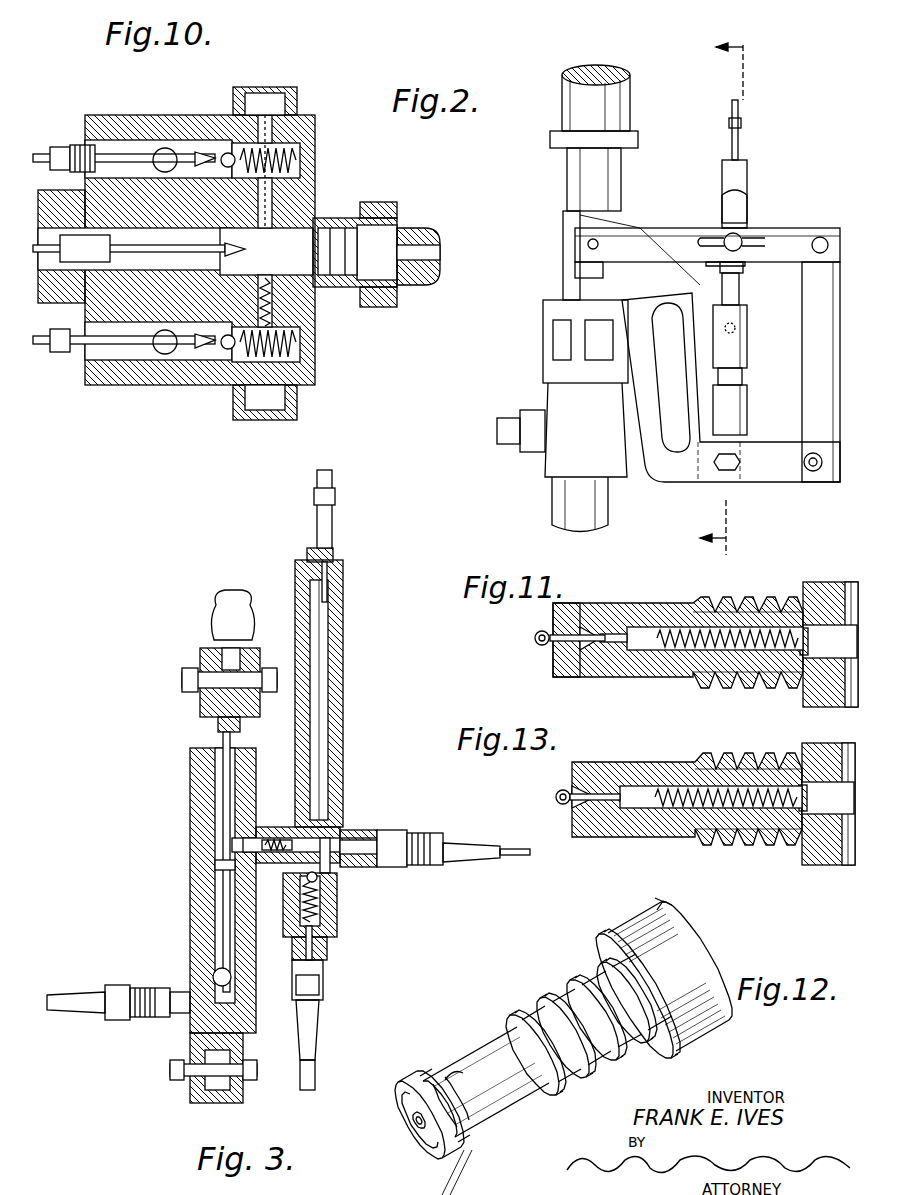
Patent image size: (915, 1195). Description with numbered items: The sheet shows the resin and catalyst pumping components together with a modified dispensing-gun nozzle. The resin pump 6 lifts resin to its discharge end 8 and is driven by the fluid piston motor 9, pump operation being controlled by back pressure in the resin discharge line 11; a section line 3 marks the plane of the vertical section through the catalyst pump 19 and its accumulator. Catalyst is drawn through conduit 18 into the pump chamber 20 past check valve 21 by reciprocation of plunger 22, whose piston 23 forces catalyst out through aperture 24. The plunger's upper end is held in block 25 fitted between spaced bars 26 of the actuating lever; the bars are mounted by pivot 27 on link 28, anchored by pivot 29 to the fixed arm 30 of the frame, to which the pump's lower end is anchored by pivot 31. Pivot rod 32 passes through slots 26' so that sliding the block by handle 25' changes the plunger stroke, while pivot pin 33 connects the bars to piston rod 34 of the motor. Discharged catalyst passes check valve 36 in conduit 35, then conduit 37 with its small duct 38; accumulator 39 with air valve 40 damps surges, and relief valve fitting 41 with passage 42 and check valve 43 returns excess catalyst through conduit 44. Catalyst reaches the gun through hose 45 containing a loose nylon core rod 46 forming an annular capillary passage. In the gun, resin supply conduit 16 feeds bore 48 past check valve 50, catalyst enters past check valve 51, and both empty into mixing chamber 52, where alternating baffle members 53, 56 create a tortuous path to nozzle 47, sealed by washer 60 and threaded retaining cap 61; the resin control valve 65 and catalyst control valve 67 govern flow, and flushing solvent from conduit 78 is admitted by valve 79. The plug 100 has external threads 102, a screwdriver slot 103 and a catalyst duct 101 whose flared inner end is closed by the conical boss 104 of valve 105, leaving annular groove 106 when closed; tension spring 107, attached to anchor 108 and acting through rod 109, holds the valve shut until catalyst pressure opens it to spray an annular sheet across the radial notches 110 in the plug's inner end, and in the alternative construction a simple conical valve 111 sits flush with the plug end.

In FIG. 2, the section line 3 is at (732, 299).
In FIG. 2, the pump 6 is at (560, 512).
In FIG. 2, the pump discharge end 8 is at (560, 460).
In FIG. 2, the fluid piston motor 9 is at (625, 100).
In FIG. 2, the resin discharge line 11 is at (505, 420).
In FIG. 10, the resin supply conduit 16 is at (175, 150).
In FIG. 3, the conduit 18 is at (60, 993).
In FIG. 2, the pump 19 is at (745, 405).
In FIG. 3, the pump 19 is at (188, 944).
In FIG. 3, the pump chamber 20 is at (213, 914).
In FIG. 3, the check valve 21 is at (212, 975).
In FIG. 2, the pump plunger 22 is at (745, 290).
In FIG. 3, the pump plunger 22 is at (222, 838).
In FIG. 3, the piston 23 is at (213, 870).
In FIG. 3, the aperture 24 is at (215, 856).
In FIG. 2, the block 25 is at (752, 276).
In FIG. 3, the block 25 is at (201, 723).
In FIG. 2, the handle 25' is at (711, 207).
In FIG. 3, the handle 25' is at (221, 602).
In FIG. 2, the spaced bars 26 is at (707, 229).
In FIG. 3, the spaced bars 26 is at (211, 671).
In FIG. 2, the slots 26' is at (716, 277).
In FIG. 2, the pivot 27 is at (829, 246).
In FIG. 2, the link 28 is at (825, 330).
In FIG. 2, the pivot 29 is at (817, 471).
In FIG. 2, the fixed arm 30 is at (675, 484).
In FIG. 3, the fixed arm 30 is at (190, 1095).
In FIG. 2, the pivot 31 is at (733, 471).
In FIG. 3, the pivot 31 is at (168, 1070).
In FIG. 2, the pivot rod 32 is at (745, 237).
In FIG. 3, the pivot rod 32 is at (180, 680).
In FIG. 2, the pivot pin 33 is at (586, 244).
In FIG. 2, the piston rod 34 is at (575, 268).
In FIG. 3, the conduit 35 is at (268, 826).
In FIG. 3, the check valve 36 is at (268, 856).
In FIG. 3, the conduit 37 is at (360, 829).
In FIG. 3, the small duct 38 is at (330, 860).
In FIG. 2, the accumulator 39 is at (750, 172).
In FIG. 3, the accumulator 39 is at (345, 672).
In FIG. 2, the air valve 40 is at (731, 140).
In FIG. 3, the air valve 40 is at (335, 556).
In FIG. 3, the relief valve fitting 41 is at (328, 944).
In FIG. 3, the passage 42 is at (298, 885).
In FIG. 3, the check valve 43 is at (338, 911).
In FIG. 3, the conduit 44 is at (316, 1062).
In FIG. 10, the catalyst conduit 45 is at (150, 295).
In FIG. 3, the catalyst conduit 45 is at (462, 845).
In FIG. 3, the flexible plastic solid core rod 46 is at (510, 848).
In FIG. 10, the nozzle 47 is at (420, 232).
In FIG. 10, the bore 48 is at (270, 195).
In FIG. 10, the check valve 50 is at (252, 90).
In FIG. 10, the check valve 51 is at (225, 352).
In FIG. 10, the mixing chamber 52 is at (300, 285).
In FIG. 10, the baffle member 53 is at (325, 240).
In FIG. 10, the baffle member 56 is at (345, 215).
In FIG. 10, the washer 60 is at (400, 270).
In FIG. 10, the threaded retaining cap 61 is at (390, 305).
In FIG. 10, the resin control valve 65 is at (228, 152).
In FIG. 10, the catalyst control valve 67 is at (180, 355).
In FIG. 10, the conduit 78 is at (75, 352).
In FIG. 10, the valve 79 is at (240, 365).
In FIG. 10, the plug 100 is at (280, 305).
In FIG. 11, the plug 100 is at (630, 607).
In FIG. 13, the plug 100 is at (630, 768).
In FIG. 12, the plug 100 is at (474, 1052).
In FIG. 11, the catalyst supply duct 101 is at (683, 660).
In FIG. 13, the catalyst supply duct 101 is at (640, 820).
In FIG. 11, the external threads 102 is at (720, 607).
In FIG. 13, the external threads 102 is at (735, 762).
In FIG. 12, the external threads 102 is at (540, 1000).
In FIG. 11, the slot 103 is at (855, 685).
In FIG. 13, the slot 103 is at (855, 860).
In FIG. 12, the slot 103 is at (672, 918).
In FIG. 11, the conical boss 104 is at (605, 672).
In FIG. 12, the conical boss 104 is at (450, 1074).
In FIG. 11, the valve 105 is at (555, 645).
In FIG. 12, the valve 105 is at (424, 1148).
In FIG. 11, the annular groove 106 is at (575, 678).
In FIG. 12, the annular groove 106 is at (462, 1150).
In FIG. 11, the tension spring 107 is at (735, 625).
In FIG. 13, the tension spring 107 is at (678, 812).
In FIG. 11, the anchor 108 is at (806, 600).
In FIG. 13, the anchor 108 is at (800, 835).
In FIG. 11, the rod 109 is at (534, 637).
In FIG. 13, the rod 109 is at (556, 796).
In FIG. 12, the rod 109 is at (412, 1121).
In FIG. 12, the lug 110 is at (433, 1070).
In FIG. 13, the valve 111 is at (572, 790).